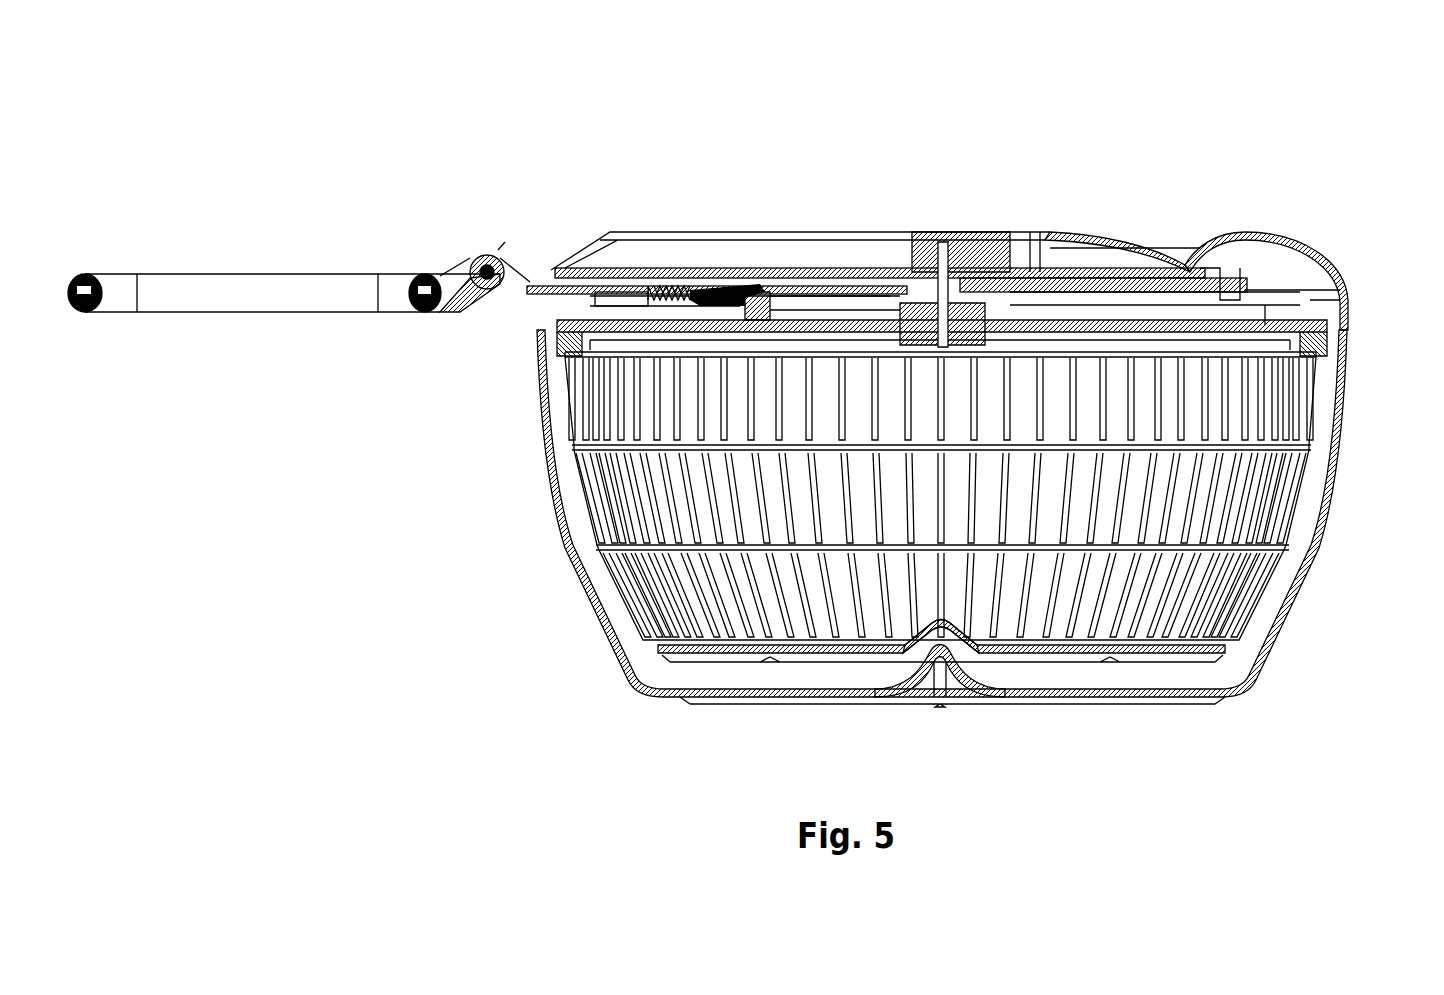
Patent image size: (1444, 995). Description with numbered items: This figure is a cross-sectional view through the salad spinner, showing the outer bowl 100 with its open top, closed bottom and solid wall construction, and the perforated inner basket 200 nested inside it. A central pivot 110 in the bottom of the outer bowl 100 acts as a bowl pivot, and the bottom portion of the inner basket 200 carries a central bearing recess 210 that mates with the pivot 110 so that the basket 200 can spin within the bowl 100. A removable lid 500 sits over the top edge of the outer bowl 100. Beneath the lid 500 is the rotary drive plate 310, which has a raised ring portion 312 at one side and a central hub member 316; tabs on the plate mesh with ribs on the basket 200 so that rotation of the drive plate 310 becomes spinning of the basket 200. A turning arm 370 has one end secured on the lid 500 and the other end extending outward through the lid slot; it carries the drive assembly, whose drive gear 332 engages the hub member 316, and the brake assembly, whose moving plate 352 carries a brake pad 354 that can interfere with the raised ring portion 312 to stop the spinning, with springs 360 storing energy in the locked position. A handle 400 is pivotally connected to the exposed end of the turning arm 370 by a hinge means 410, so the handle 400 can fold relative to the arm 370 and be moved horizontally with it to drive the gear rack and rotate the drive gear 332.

The outer bowl 100 is at (566, 590).
The central pivot 110 is at (983, 706).
The inner basket 200 is at (583, 505).
The central bearing recess 210 is at (930, 635).
The rotary drive plate 310 is at (1330, 330).
The raised ring portion 312 is at (715, 330).
The central hub member 316 is at (1128, 255).
The drive gear 332 is at (1003, 240).
The moving plate 352 is at (738, 290).
The brake pad 354 is at (812, 290).
The springs 360 is at (671, 266).
The turning arm 370 is at (1172, 270).
The handle 400 is at (258, 292).
The hinge means 410 is at (488, 248).
The lid 500 is at (1300, 242).